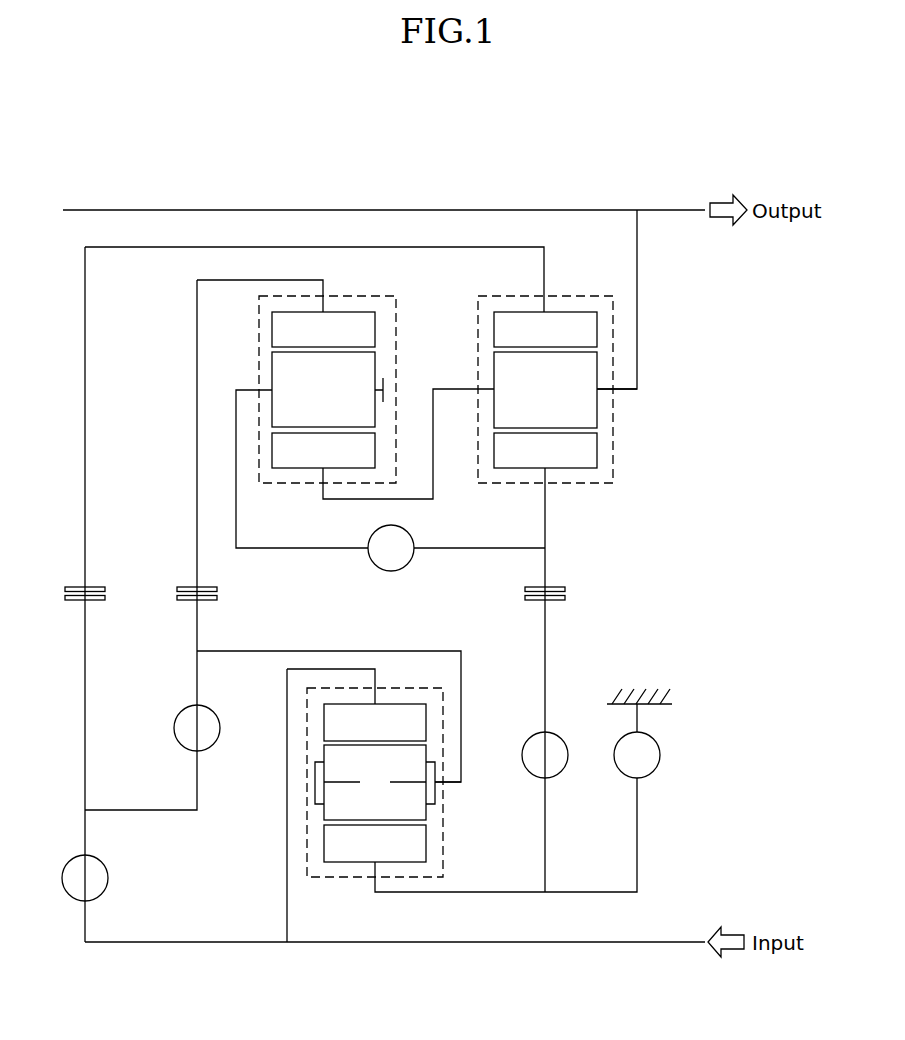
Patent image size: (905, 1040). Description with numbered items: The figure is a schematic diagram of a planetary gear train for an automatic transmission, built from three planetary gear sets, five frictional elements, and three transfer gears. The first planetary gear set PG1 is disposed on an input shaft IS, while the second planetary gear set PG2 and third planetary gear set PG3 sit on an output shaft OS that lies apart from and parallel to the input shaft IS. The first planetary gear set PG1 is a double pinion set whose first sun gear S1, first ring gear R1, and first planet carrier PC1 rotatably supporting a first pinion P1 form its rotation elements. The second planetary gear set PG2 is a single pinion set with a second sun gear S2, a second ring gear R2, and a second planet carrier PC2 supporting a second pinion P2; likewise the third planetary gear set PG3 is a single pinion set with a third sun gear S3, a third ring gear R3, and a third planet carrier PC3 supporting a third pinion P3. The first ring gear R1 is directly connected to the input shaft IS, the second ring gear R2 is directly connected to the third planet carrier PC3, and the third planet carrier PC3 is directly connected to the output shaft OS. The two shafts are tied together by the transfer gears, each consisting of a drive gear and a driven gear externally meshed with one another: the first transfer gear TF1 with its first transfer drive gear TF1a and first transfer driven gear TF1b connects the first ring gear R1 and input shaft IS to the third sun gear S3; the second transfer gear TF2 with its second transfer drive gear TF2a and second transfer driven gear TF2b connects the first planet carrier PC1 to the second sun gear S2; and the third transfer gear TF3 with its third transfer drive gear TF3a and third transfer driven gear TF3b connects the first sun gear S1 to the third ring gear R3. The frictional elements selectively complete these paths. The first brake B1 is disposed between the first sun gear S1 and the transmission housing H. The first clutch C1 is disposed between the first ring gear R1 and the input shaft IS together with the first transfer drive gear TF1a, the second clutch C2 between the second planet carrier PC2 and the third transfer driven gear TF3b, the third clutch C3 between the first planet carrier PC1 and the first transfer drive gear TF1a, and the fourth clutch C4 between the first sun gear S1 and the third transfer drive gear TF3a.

The first planetary gear set PG1 is at (375, 850).
The second planetary gear set PG2 is at (316, 318).
The third planetary gear set PG3 is at (554, 318).
The first sun gear S1 is at (375, 843).
The second sun gear S2 is at (323, 329).
The third sun gear S3 is at (545, 329).
The first pinion P1 is at (375, 782).
The second pinion P2 is at (323, 389).
The third pinion P3 is at (545, 390).
The first ring gear R1 is at (375, 722).
The second ring gear R2 is at (323, 450).
The third ring gear R3 is at (545, 450).
The first planet carrier PC1 is at (452, 784).
The second planet carrier PC2 is at (243, 388).
The third planet carrier PC3 is at (630, 392).
The input shaft IS is at (562, 944).
The output shaft OS is at (390, 208).
The first clutch C1 is at (85, 878).
The second clutch C2 is at (391, 548).
The third clutch C3 is at (197, 728).
The fourth clutch C4 is at (545, 755).
The first brake B1 is at (637, 741).
The transmission housing H is at (645, 690).
The first transfer gear TF1 is at (129, 556).
The first transfer drive gear TF1a is at (100, 598).
The first transfer driven gear TF1b is at (108, 597).
The second transfer gear TF2 is at (259, 592).
The second transfer drive gear TF2a is at (217, 600).
The second transfer driven gear TF2b is at (217, 587).
The third transfer gear TF3 is at (607, 592).
The third transfer drive gear TF3a is at (565, 600).
The third transfer driven gear TF3b is at (565, 587).